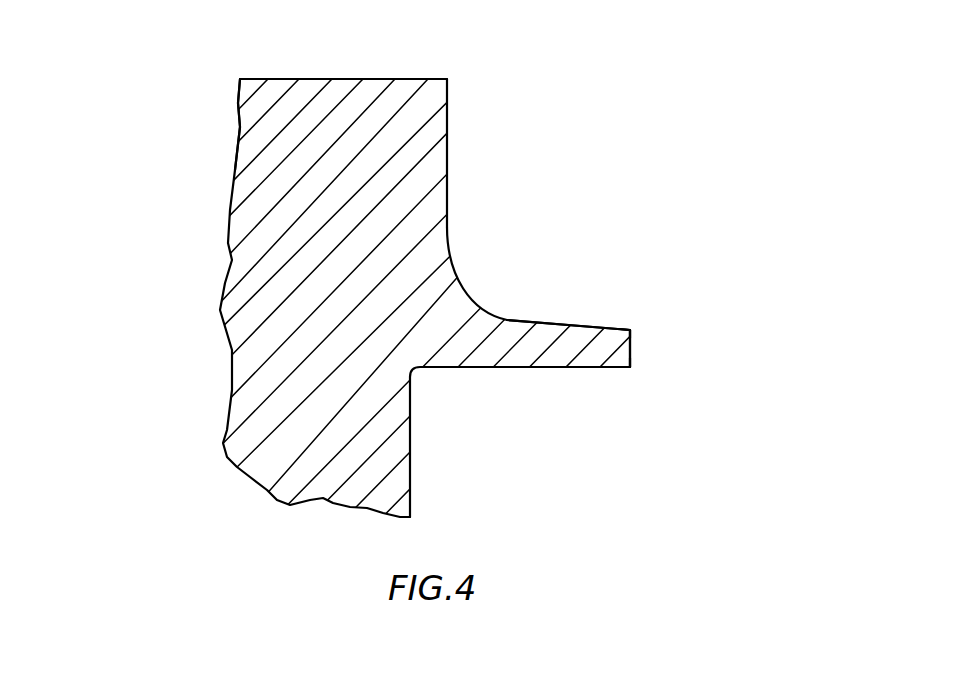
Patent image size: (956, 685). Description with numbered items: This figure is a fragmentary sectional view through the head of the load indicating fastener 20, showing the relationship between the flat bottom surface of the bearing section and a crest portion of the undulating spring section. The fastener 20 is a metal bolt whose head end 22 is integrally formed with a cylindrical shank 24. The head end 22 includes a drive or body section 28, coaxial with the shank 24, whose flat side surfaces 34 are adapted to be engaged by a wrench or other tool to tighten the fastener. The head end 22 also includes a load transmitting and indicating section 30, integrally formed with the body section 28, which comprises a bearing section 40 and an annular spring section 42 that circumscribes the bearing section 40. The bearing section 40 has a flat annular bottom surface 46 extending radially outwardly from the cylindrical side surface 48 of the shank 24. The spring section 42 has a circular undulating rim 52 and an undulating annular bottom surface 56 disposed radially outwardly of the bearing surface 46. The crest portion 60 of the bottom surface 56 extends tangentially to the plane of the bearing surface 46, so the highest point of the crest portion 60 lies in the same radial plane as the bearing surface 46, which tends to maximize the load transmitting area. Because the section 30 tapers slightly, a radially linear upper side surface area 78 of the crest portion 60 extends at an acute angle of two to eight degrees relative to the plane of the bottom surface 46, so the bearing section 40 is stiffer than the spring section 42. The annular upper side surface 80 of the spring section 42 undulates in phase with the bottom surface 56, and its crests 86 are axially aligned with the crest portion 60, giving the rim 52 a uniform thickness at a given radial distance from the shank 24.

The load indicating fastener 20 is at (682, 114).
The head end 22 is at (126, 101).
The cylindrical shank 24 is at (278, 463).
The drive or body section 28 is at (450, 116).
The load transmitting and indicating section 30 is at (670, 287).
The flat side surfaces 34 is at (447, 153).
The bearing section 40 is at (471, 306).
The spring section 42 is at (551, 317).
The flat annular bottom surface 46 is at (453, 368).
The cylindrical side surface 48 is at (410, 479).
The circular undulating rim 52 is at (632, 345).
The undulating annular bottom surface 56 is at (580, 373).
The crest portion 60 is at (613, 372).
The radially linear upper side surface area 78 is at (546, 329).
The annular upper side surface 80 is at (594, 320).
The crests 86 is at (630, 325).